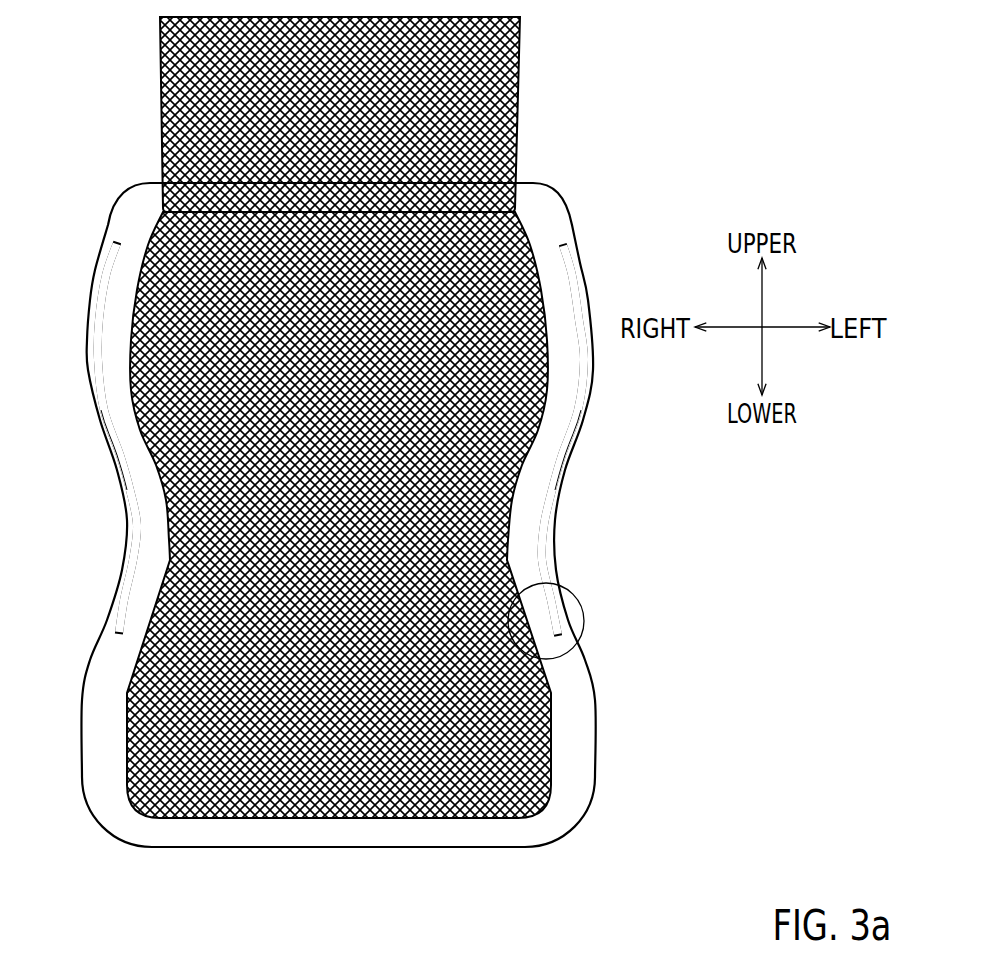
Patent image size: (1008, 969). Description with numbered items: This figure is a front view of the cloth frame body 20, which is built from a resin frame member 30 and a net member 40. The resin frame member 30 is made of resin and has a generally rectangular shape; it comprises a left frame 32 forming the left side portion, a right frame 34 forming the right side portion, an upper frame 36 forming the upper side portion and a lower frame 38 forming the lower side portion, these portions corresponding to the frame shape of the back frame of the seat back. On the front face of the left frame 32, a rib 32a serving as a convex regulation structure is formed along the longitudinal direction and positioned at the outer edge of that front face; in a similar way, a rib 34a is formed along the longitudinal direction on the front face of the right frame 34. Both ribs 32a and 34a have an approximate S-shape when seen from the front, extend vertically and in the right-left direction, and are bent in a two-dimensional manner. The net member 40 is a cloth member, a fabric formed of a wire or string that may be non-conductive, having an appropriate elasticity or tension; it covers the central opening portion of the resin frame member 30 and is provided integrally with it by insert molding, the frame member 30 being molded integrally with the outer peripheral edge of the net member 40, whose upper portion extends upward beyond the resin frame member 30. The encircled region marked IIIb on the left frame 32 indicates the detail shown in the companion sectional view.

The cloth frame body 20 is at (403, 470).
The resin frame member 30 is at (574, 217).
The left frame 32 is at (556, 510).
The rib 32a is at (551, 453).
The right frame 34 is at (128, 514).
The rib 34a is at (128, 472).
The upper frame 36 is at (475, 195).
The lower frame 38 is at (357, 833).
The net member 40 is at (283, 767).
The detail view IIIb region IIIb is at (593, 616).